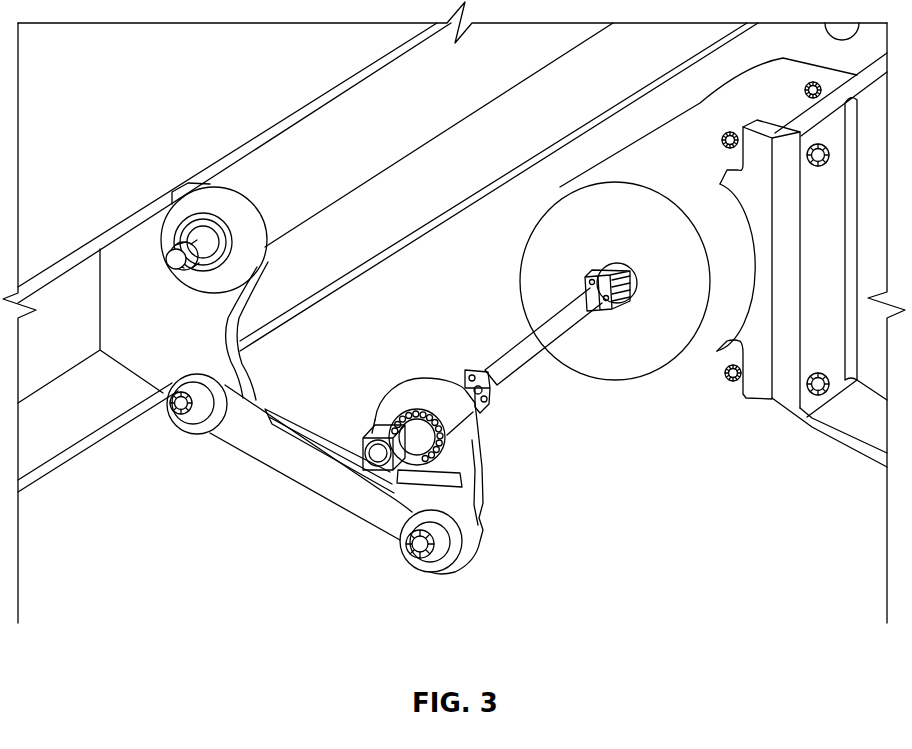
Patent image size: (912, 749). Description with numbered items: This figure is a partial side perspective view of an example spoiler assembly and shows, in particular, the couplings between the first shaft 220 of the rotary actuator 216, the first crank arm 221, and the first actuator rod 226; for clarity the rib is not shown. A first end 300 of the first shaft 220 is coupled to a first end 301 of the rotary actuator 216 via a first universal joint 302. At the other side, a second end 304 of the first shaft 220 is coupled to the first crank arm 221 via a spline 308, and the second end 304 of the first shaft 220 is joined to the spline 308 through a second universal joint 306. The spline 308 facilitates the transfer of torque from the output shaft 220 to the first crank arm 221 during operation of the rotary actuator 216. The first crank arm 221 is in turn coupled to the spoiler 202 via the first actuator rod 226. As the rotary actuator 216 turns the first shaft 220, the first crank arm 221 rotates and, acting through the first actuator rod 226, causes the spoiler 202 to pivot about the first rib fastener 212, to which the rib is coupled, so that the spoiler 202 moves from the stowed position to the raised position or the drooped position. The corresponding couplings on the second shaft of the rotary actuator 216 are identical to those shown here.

The spoiler 202 is at (360, 75).
The first rib fastener 212 is at (168, 243).
The rotary actuator 216 is at (705, 82).
The first shaft 220 is at (553, 306).
The first crank arm 221 is at (432, 380).
The first actuator rod 226 is at (258, 446).
The first end of the first shaft 300 is at (580, 305).
The first end of the rotary actuator 301 is at (636, 202).
The first universal joint 302 is at (594, 276).
The second end of the first shaft 304 is at (490, 398).
The second universal joint 306 is at (499, 386).
The spline 308 is at (395, 404).